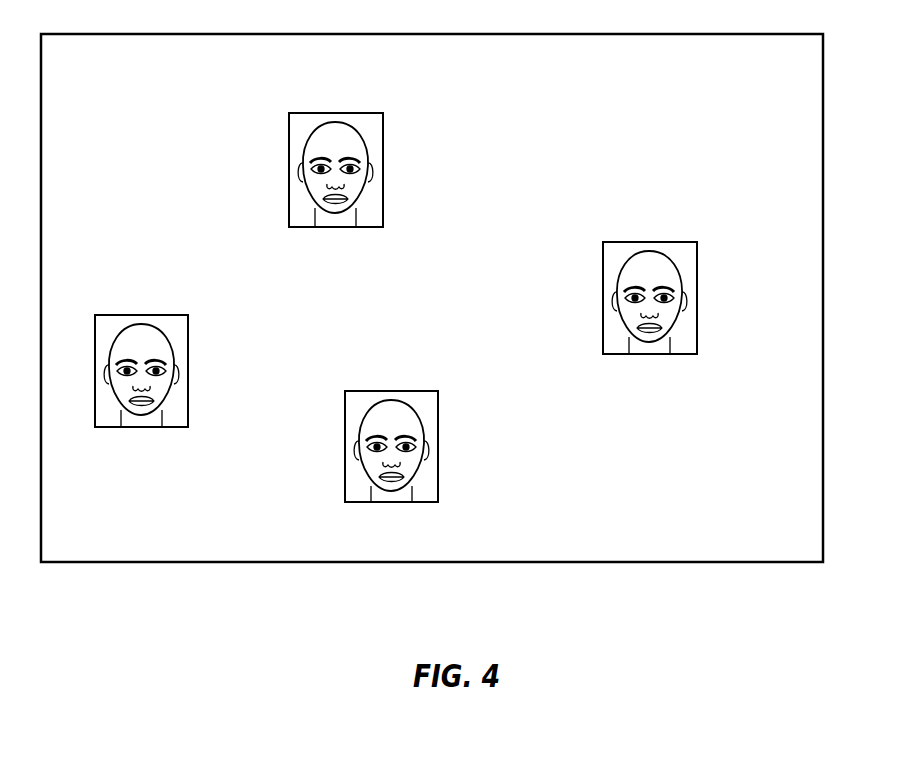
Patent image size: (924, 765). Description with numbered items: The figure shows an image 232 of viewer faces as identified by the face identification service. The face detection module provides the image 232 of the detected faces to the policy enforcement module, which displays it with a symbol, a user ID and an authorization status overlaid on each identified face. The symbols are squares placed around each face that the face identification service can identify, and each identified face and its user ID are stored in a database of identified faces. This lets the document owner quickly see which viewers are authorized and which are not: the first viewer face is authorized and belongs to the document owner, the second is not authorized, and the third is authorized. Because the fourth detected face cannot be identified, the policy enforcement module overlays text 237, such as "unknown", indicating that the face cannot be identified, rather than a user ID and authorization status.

The image 232 is at (823, 67).
The text 237 is at (383, 95).